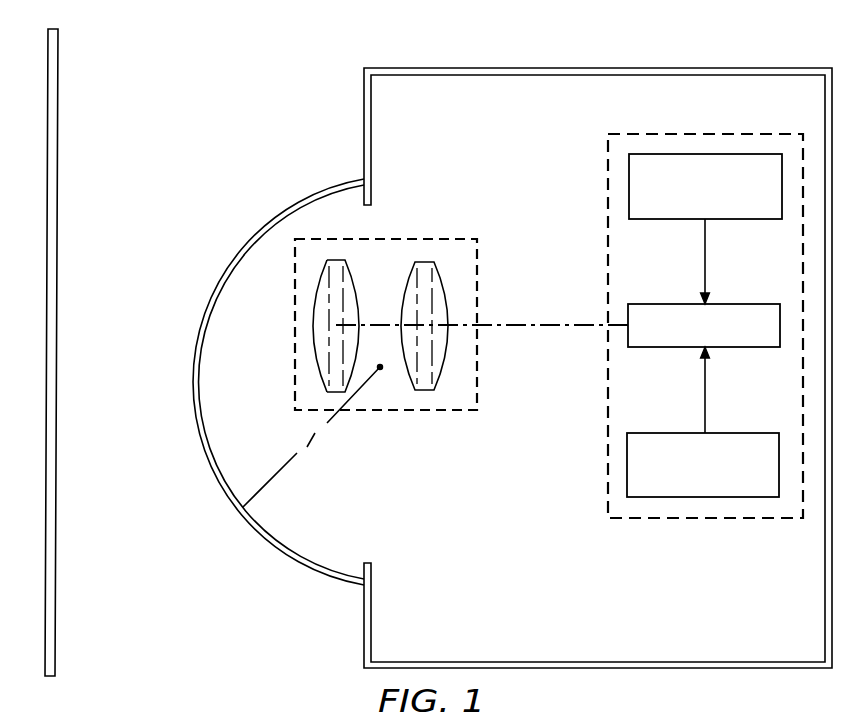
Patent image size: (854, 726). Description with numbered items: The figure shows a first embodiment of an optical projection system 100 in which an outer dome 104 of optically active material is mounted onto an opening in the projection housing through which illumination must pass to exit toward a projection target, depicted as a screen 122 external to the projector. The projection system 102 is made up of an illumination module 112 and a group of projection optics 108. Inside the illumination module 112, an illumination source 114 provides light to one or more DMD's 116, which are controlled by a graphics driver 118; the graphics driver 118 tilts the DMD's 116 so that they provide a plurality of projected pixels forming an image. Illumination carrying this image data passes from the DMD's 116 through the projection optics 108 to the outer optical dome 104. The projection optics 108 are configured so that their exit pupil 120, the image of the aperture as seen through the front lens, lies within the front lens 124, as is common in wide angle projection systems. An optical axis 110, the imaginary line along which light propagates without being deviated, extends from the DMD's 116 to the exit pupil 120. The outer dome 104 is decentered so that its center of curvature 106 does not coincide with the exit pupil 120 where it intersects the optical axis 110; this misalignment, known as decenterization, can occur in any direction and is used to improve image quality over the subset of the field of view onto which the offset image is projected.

The display system 100 is at (246, 67).
The projection system 102 is at (577, 604).
The outer dome 104 is at (308, 573).
The center of curvature 106 is at (382, 368).
The projection optics 108 is at (440, 239).
The optical axis 110 is at (523, 325).
The illumination module 112 is at (605, 437).
The illumination source 114 is at (742, 433).
The DMD 116 is at (668, 304).
The graphics driver 118 is at (740, 219).
The exit pupil 120 is at (336, 326).
The display screen 122 is at (58, 463).
The front lens 124 is at (313, 304).